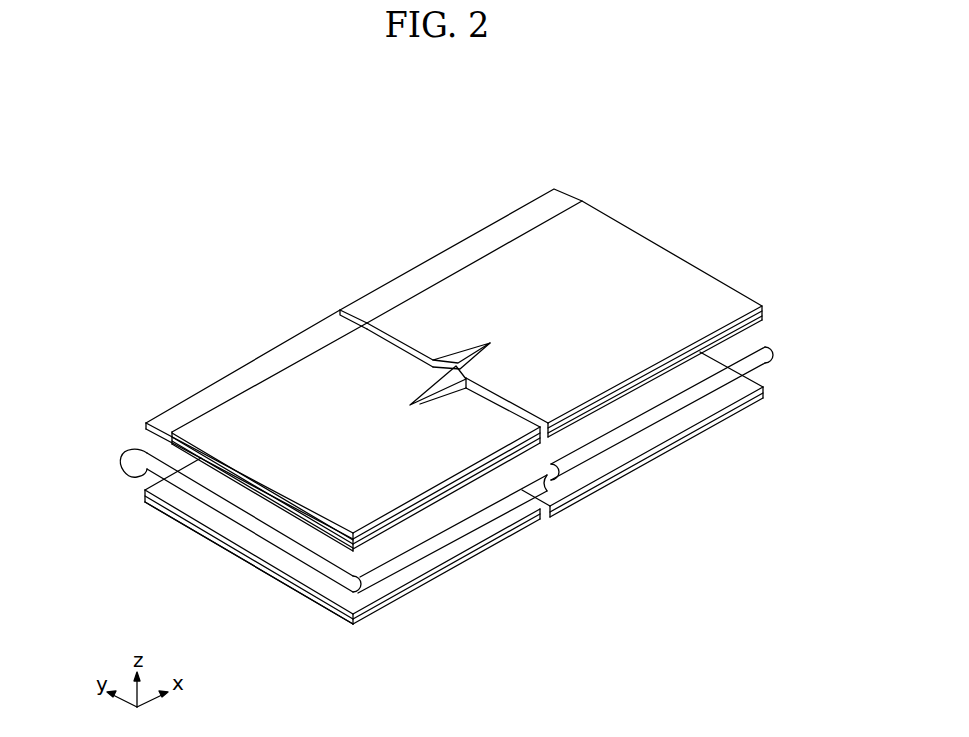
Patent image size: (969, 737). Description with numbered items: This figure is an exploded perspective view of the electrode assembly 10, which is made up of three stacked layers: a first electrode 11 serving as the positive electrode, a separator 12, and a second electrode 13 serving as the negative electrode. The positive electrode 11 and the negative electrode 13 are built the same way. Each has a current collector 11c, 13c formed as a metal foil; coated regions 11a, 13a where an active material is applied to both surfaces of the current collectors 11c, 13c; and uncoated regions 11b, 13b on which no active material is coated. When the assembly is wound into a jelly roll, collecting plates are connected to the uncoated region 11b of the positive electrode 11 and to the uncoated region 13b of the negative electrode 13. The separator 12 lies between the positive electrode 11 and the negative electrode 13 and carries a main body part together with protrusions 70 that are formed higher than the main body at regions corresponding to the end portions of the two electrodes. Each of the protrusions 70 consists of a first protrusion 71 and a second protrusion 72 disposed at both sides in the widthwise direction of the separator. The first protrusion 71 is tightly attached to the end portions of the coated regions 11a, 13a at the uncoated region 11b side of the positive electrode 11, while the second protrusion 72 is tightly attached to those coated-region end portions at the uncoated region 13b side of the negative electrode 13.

The electrode assembly 10 is at (423, 152).
The first electrode 11 is at (481, 500).
The coated region 11a is at (237, 561).
The uncoated region 11b is at (392, 588).
The current collector 11c is at (300, 606).
The separator 12 is at (767, 342).
The second electrode 13 is at (745, 290).
The coated region 13a is at (310, 527).
The uncoated region 13b is at (277, 356).
The current collector 13c is at (190, 466).
The protrusions 70 is at (403, 511).
The first protrusion 71 is at (455, 527).
The second protrusion 72 is at (126, 446).